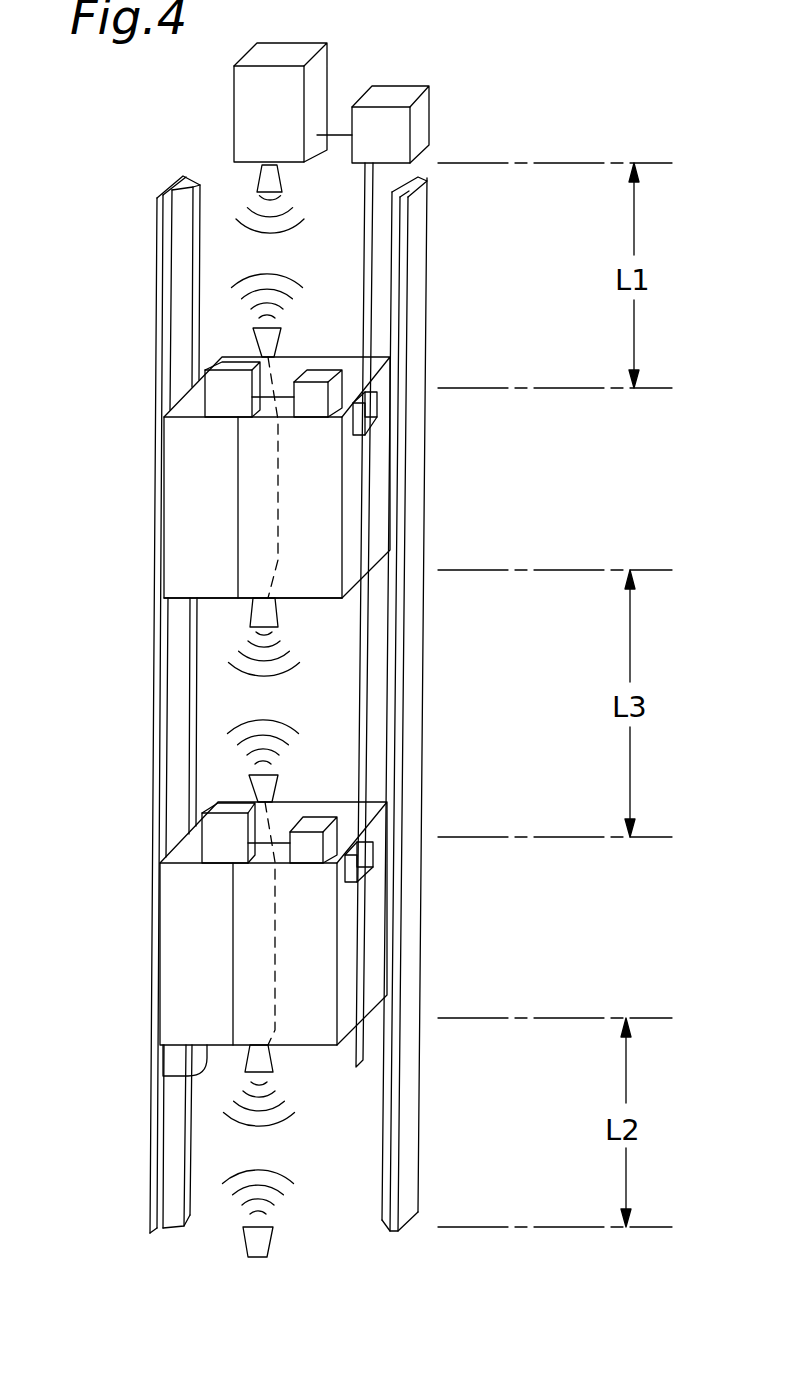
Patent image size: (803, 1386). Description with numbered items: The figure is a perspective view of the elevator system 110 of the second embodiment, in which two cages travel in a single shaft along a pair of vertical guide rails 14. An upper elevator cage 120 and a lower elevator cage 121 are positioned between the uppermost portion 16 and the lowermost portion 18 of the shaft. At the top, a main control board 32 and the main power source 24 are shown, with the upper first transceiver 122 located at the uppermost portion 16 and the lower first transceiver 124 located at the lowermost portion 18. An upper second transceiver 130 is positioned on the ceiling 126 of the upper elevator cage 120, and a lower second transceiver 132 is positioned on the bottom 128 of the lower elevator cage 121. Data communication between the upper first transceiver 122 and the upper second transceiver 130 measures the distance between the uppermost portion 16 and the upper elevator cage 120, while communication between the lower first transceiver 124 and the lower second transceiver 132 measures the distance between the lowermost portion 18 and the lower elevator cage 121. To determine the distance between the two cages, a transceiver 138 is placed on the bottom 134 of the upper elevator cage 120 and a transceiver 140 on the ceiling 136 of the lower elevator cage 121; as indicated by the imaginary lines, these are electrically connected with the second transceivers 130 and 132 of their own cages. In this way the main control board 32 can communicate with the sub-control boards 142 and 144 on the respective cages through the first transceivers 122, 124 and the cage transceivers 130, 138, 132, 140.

The elevator system 110 is at (128, 260).
The guide rail 14 is at (153, 783).
The uppermost portion 16 is at (338, 214).
The lowermost portion 18 is at (332, 1248).
The main control board 32 is at (297, 48).
The main power source 24 is at (423, 122).
The upper first transceiver 122 is at (257, 182).
The lower first transceiver 124 is at (258, 1242).
The upper elevator cage 120 is at (190, 495).
The lower elevator cage 121 is at (187, 940).
The ceiling of the upper elevator cage 126 is at (193, 400).
The bottom of the lower elevator cage 128 is at (203, 1073).
The upper second transceiver 130 is at (275, 342).
The transceiver 138 is at (278, 620).
The transceiver 140 is at (267, 782).
The lower second transceiver 132 is at (262, 1062).
The bottom of the upper elevator cage 134 is at (313, 600).
The ceiling of the lower elevator cage 136 is at (347, 812).
The sub-control board 142 is at (223, 378).
The sub-control board 144 is at (213, 843).